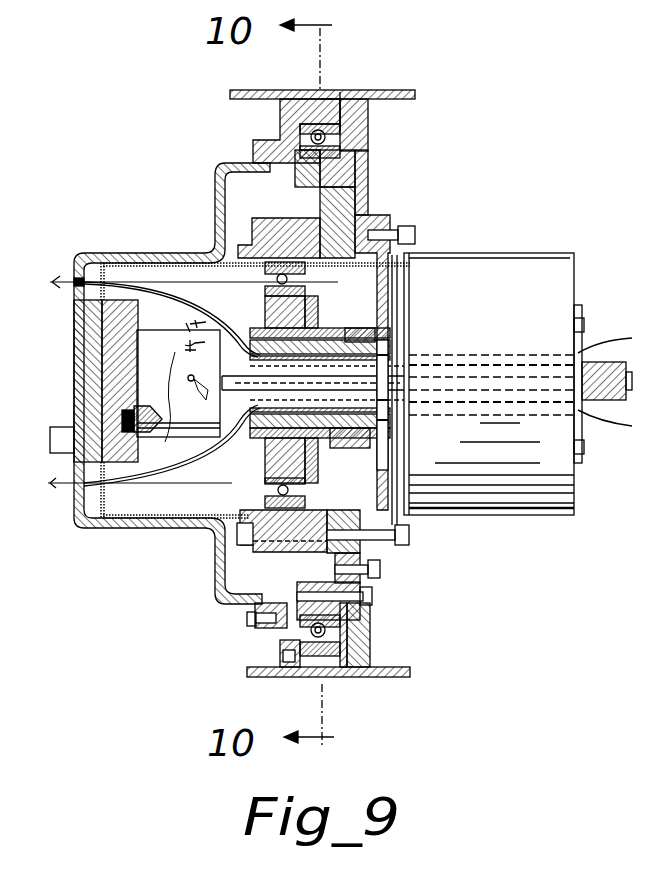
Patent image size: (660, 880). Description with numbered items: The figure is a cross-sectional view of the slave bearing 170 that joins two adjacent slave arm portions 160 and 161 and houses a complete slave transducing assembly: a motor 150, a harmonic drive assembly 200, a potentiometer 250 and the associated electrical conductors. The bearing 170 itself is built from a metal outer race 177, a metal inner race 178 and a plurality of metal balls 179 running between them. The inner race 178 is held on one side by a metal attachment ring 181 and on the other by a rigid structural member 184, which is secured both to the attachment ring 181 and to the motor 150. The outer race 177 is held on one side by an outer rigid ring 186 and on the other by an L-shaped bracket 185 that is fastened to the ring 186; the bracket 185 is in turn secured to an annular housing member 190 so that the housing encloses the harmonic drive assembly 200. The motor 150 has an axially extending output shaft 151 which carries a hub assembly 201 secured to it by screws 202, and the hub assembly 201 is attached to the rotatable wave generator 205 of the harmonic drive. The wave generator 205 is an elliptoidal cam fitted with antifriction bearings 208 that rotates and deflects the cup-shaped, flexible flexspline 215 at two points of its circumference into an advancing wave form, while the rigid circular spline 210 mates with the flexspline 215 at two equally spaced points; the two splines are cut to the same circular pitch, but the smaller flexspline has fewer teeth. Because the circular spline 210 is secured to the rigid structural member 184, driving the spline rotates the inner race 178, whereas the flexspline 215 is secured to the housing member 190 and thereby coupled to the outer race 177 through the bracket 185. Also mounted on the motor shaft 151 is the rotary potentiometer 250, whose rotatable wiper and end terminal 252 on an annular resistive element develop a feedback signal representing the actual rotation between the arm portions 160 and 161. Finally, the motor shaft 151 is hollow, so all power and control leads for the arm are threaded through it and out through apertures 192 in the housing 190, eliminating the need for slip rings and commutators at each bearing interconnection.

The motor 150 is at (502, 301).
The output shaft 151 is at (238, 340).
The slave arm portion 160 is at (395, 668).
The slave arm portion 161 is at (250, 667).
The bearing 170 is at (440, 186).
The outer race 177 is at (366, 130).
The inner race 178 is at (360, 160).
The balls 179 is at (315, 130).
The attachment ring 181 is at (296, 176).
The rigid structural member 184 is at (372, 101).
The L-shaped bracket 185 is at (282, 116).
The outer rigid ring 186 is at (332, 96).
The annular housing member 190 is at (218, 176).
The apertures 192 is at (62, 282).
The harmonic drive assembly 200 is at (236, 226).
The hub assembly 201 is at (330, 328).
The screws 202 is at (388, 310).
The wave generator 205 is at (312, 458).
The antifriction bearings 208 is at (258, 492).
The circular spline 210 is at (286, 224).
The flexspline 215 is at (185, 253).
The potentiometer 250 is at (175, 345).
The end terminal 252 is at (148, 434).